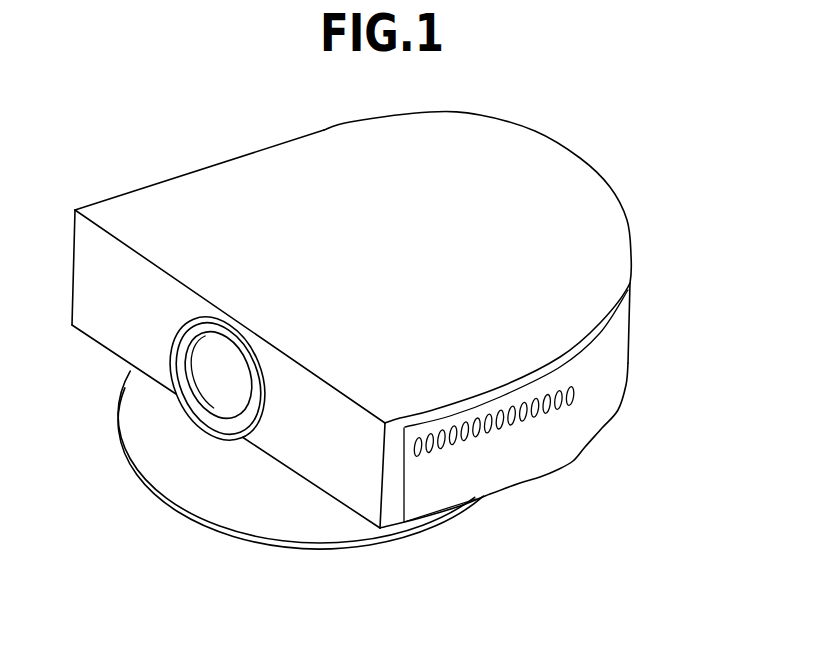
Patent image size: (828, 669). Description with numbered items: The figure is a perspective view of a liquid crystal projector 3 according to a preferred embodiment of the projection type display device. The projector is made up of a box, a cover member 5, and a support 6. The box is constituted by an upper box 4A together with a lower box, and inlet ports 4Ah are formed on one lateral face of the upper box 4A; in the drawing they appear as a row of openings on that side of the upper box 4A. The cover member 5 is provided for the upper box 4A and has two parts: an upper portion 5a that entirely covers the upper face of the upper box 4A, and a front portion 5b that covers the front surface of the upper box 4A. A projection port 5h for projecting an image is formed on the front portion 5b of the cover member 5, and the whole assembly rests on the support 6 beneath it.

The liquid crystal projector 3 is at (550, 627).
The cover member 5 is at (578, 215).
The upper portion 5a is at (602, 247).
The front portion 5b is at (413, 522).
The projection port 5h is at (250, 388).
The upper box 4A is at (518, 468).
The inlet ports 4Ah is at (538, 417).
The support 6 is at (312, 518).